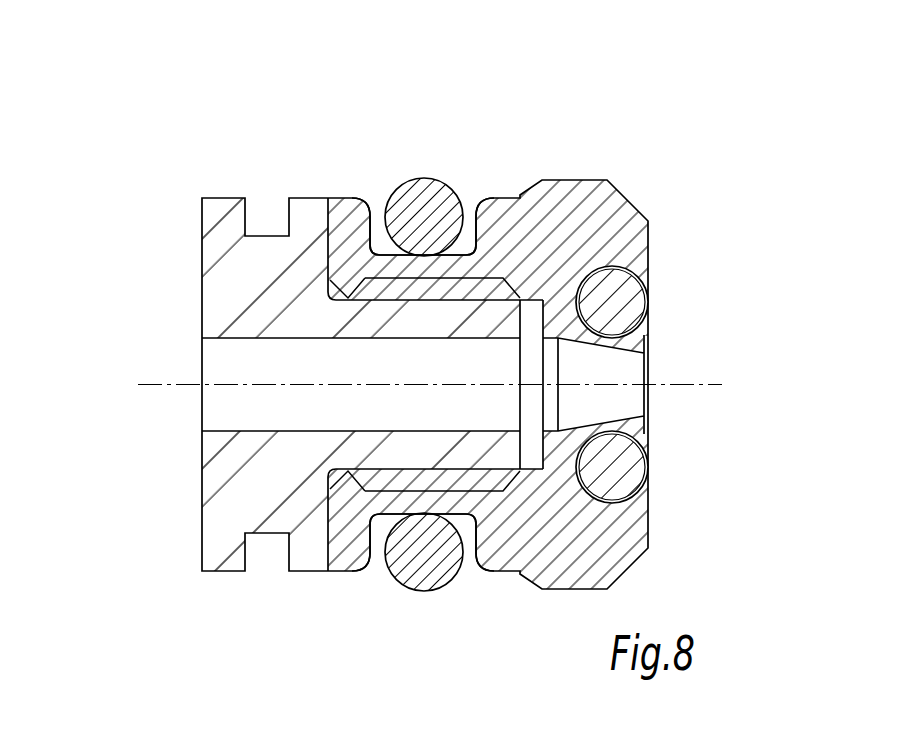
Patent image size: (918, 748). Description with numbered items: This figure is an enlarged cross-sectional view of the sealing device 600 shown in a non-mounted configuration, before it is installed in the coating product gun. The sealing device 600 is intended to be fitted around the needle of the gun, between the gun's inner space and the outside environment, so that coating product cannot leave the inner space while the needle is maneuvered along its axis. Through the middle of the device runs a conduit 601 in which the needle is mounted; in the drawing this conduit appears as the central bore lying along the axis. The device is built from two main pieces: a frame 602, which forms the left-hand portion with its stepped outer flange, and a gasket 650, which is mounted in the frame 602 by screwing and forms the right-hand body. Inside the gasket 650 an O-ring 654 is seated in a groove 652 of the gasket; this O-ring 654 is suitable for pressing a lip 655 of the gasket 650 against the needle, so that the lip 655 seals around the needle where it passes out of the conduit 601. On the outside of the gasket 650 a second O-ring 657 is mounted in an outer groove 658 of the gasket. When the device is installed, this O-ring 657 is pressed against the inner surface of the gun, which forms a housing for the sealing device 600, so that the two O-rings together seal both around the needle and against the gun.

The sealing device 600 is at (260, 147).
The conduit 601 is at (268, 407).
The frame 602 is at (230, 248).
The gasket 650 is at (610, 545).
The groove 652 is at (590, 302).
The O-ring 654 is at (625, 472).
The lip 655 is at (635, 427).
The O-ring 657 is at (430, 212).
The outer groove 658 is at (385, 230).